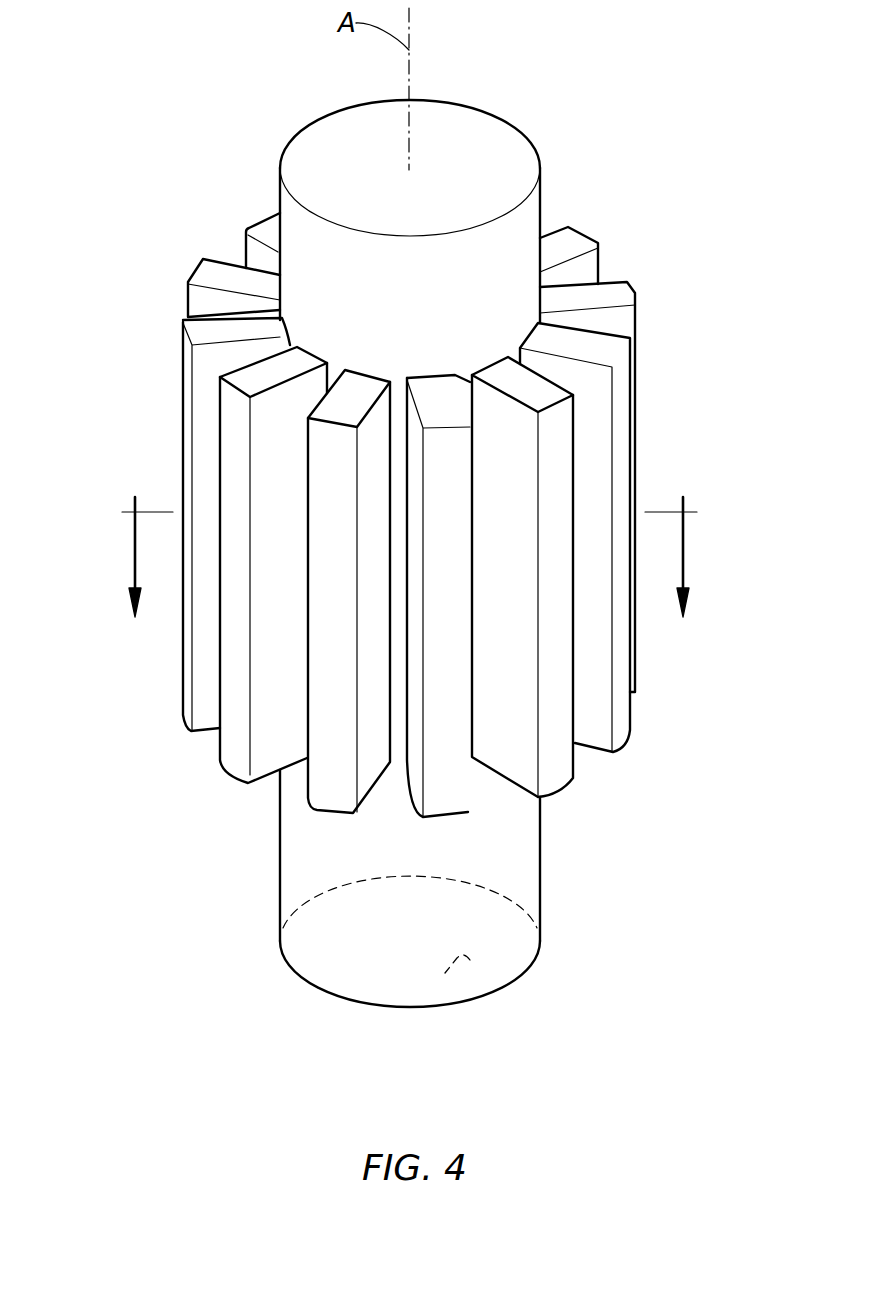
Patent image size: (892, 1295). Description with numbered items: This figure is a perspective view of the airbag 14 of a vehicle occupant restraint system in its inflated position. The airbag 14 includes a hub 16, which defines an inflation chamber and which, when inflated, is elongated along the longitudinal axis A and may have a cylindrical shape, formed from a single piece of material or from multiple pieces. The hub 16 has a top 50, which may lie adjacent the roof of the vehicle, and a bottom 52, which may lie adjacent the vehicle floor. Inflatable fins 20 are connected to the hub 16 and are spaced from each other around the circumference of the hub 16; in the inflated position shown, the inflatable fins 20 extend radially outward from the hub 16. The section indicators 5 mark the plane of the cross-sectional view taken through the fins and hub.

The airbag 14 is at (182, 166).
The hub 16 is at (543, 198).
The inflatable fins 20 is at (303, 468).
The top 50 is at (487, 147).
The bottom 52 is at (470, 960).
The section line 5- 5 is at (410, 554).